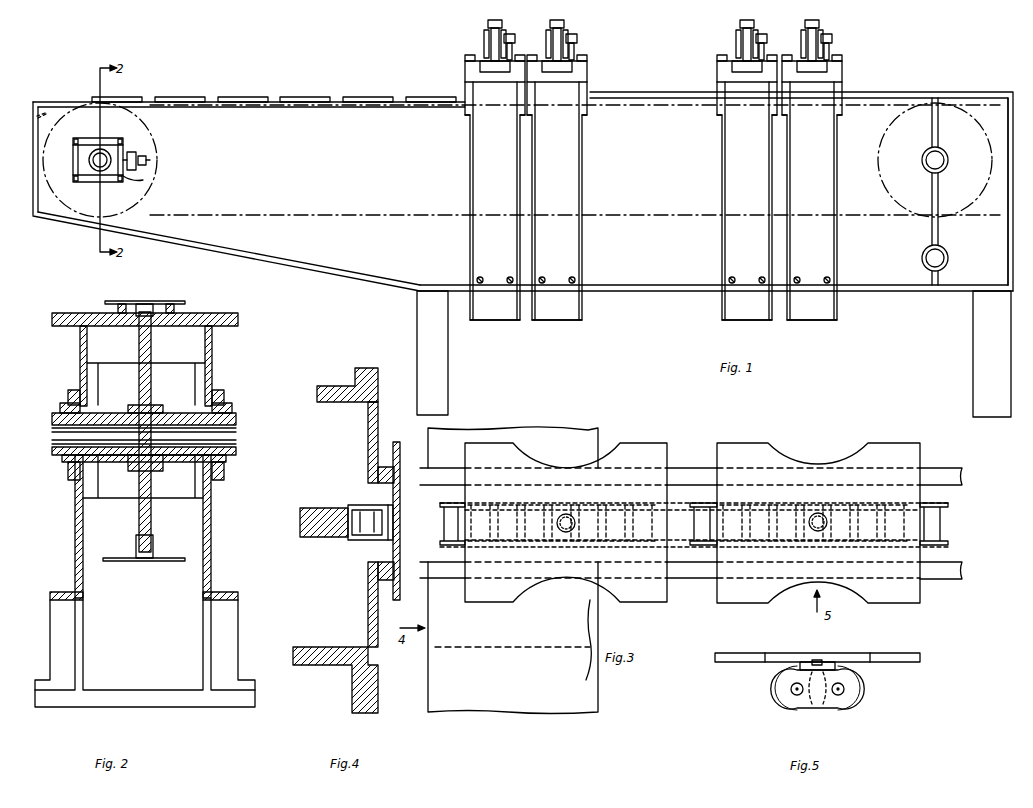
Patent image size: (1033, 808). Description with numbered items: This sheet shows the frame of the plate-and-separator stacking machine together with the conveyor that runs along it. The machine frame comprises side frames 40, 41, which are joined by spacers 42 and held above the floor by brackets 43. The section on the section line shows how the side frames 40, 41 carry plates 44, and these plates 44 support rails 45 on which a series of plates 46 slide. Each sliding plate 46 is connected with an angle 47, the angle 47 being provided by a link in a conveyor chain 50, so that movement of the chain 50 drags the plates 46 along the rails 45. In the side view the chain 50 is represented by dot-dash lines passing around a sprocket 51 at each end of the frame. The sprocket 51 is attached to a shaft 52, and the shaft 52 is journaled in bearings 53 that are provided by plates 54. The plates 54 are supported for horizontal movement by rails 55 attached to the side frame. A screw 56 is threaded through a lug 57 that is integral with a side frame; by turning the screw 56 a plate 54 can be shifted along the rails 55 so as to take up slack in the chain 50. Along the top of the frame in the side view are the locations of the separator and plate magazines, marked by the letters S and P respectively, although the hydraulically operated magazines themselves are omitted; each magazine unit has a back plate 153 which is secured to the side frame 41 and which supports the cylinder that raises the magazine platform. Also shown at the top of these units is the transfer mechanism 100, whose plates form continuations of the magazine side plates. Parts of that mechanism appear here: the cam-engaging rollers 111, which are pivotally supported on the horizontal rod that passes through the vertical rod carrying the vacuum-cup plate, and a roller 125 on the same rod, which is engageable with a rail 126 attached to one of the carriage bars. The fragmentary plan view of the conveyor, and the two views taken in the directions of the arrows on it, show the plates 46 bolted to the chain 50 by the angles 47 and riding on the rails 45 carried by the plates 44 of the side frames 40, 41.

In FIG. 2, the side frame 40 is at (75, 553).
In FIG. 4, the side frame 40 is at (338, 402).
In FIG. 1, the side frame 41 is at (690, 284).
In FIG. 2, the side frame 41 is at (211, 556).
In FIG. 4, the side frame 41 is at (347, 639).
In FIG. 2, the spacer 42 is at (120, 495).
In FIG. 1, the bracket 43 is at (961, 363).
In FIG. 2, the plate 44 is at (215, 316).
In FIG. 4, the plate 44 is at (358, 605).
In FIG. 2, the rail 45 is at (170, 290).
In FIG. 4, the rail 45 is at (358, 575).
In FIG. 3, the rail 45 is at (958, 554).
In FIG. 1, the plate 46 is at (245, 97).
In FIG. 2, the plate 46 is at (147, 300).
In FIG. 4, the plate 46 is at (400, 448).
In FIG. 3, the plate 46 is at (702, 430).
In FIG. 5, the plate 46 is at (890, 653).
In FIG. 2, the angle 47 is at (136, 314).
In FIG. 4, the angle 47 is at (358, 505).
In FIG. 5, the angle 47 is at (835, 668).
In FIG. 1, the conveyor chain 50 is at (228, 215).
In FIG. 3, the conveyor chain 50 is at (694, 525).
In FIG. 5, the conveyor chain 50 is at (845, 689).
In FIG. 1, the sprocket 51 is at (152, 153).
In FIG. 2, the sprocket 51 is at (151, 348).
In FIG. 4, the sprocket 51 is at (325, 537).
In FIG. 2, the shaft 52 is at (120, 465).
In FIG. 2, the bearing 53 is at (251, 418).
In FIG. 1, the plate 54 is at (140, 182).
In FIG. 2, the plate 54 is at (242, 399).
In FIG. 2, the rail 55 is at (234, 383).
In FIG. 1, the screw 56 is at (146, 161).
In FIG. 1, the lug 57 is at (132, 157).
In FIG. 1, the transfer mechanism 100 is at (659, 170).
In FIG. 1, the roller 111 is at (828, 20).
In FIG. 1, the roller 125 is at (842, 54).
In FIG. 1, the rail 126 is at (856, 79).
In FIG. 1, the back plate 153 is at (821, 179).